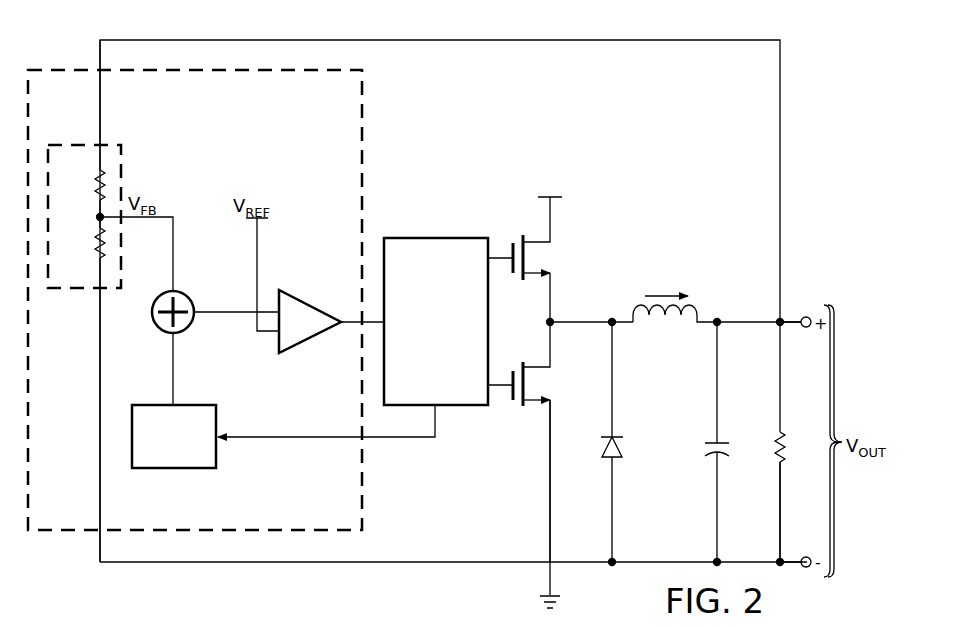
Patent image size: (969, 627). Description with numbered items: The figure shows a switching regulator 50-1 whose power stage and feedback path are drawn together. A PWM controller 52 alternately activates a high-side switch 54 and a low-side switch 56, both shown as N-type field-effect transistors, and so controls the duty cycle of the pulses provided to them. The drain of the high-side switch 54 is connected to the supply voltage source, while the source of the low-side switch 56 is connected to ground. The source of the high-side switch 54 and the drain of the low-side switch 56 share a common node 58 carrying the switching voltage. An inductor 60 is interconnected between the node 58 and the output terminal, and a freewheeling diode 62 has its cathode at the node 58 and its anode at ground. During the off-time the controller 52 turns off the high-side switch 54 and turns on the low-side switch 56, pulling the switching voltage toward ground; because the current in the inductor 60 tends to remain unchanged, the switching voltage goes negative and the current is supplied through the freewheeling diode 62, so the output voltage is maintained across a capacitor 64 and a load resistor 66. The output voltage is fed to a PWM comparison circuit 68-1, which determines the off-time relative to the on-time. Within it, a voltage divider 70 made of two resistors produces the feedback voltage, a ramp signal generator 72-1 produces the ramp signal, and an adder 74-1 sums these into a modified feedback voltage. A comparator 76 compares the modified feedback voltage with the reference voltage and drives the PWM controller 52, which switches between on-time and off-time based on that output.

The switching regulator 50-1 is at (805, 62).
The PWM comparison circuit 68-1 is at (82, 66).
The voltage divider 70 is at (82, 140).
The adder 74-1 is at (160, 332).
The comparator 76 is at (308, 308).
The PWM controller 52 is at (365, 337).
The high-side switch 54 is at (507, 250).
The low-side switch 56 is at (506, 396).
The common node 58 is at (553, 328).
The inductor 60 is at (700, 316).
The freewheeling diode 62 is at (604, 438).
The capacitor 64 is at (706, 447).
The load resistor 66 is at (775, 443).
The ramp signal generator 72-1 is at (162, 470).